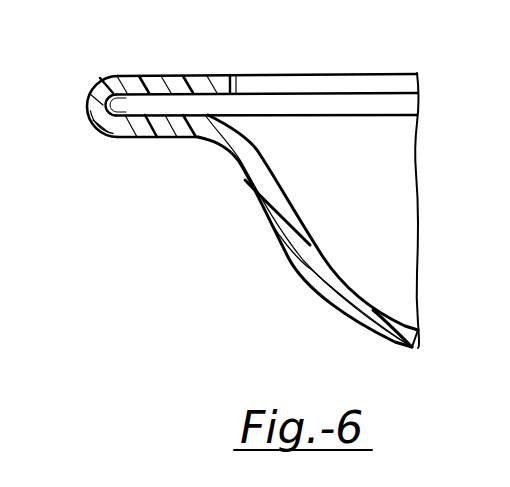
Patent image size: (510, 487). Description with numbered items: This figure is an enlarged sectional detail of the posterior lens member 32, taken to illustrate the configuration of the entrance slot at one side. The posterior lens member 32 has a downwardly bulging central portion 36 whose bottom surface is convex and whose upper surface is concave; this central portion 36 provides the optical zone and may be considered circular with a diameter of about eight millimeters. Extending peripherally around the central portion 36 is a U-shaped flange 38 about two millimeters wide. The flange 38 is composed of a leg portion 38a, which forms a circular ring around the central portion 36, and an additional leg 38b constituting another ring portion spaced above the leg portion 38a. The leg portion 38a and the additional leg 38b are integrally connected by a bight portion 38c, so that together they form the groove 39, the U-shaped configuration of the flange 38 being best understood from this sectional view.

The U-shaped flange 38 is at (100, 75).
The leg portion 38a is at (150, 137).
The additional leg 38b is at (152, 75).
The bight portion 38c is at (85, 110).
The groove 39 is at (199, 139).
The posterior lens member 32 is at (277, 246).
The central portion 36 is at (342, 312).